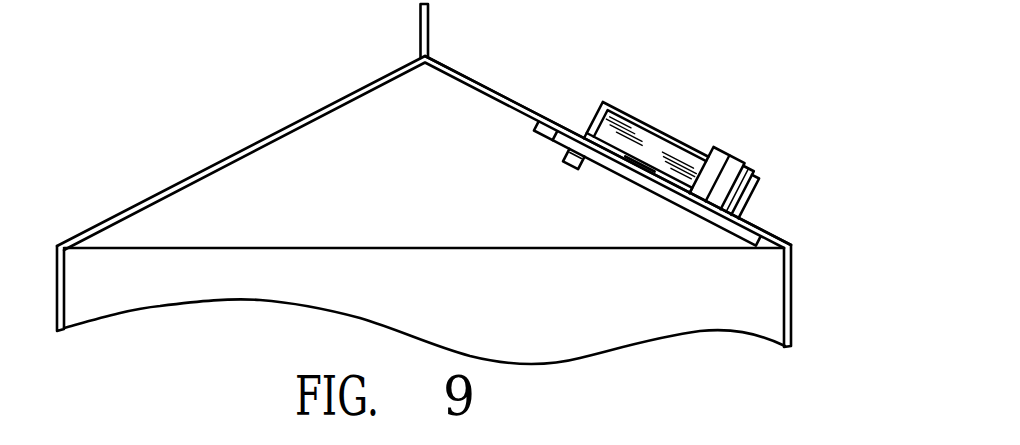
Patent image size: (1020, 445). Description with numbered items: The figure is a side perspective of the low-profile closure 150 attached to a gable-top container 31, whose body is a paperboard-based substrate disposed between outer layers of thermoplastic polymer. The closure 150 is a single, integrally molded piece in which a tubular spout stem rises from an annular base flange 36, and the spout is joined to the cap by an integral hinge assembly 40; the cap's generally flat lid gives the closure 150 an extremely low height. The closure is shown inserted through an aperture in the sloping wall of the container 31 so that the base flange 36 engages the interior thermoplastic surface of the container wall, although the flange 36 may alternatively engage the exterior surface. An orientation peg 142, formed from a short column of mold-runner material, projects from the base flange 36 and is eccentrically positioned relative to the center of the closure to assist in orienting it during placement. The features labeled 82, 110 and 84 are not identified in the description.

The gable-top container 31 is at (256, 140).
The roof deck 82 is at (473, 85).
The base flange 36 is at (550, 138).
The hinge assembly 40 is at (592, 115).
The orientation peg 142 is at (571, 170).
The closure 150 is at (722, 95).
The junction box 110 is at (752, 198).
The fascia 84 is at (792, 307).